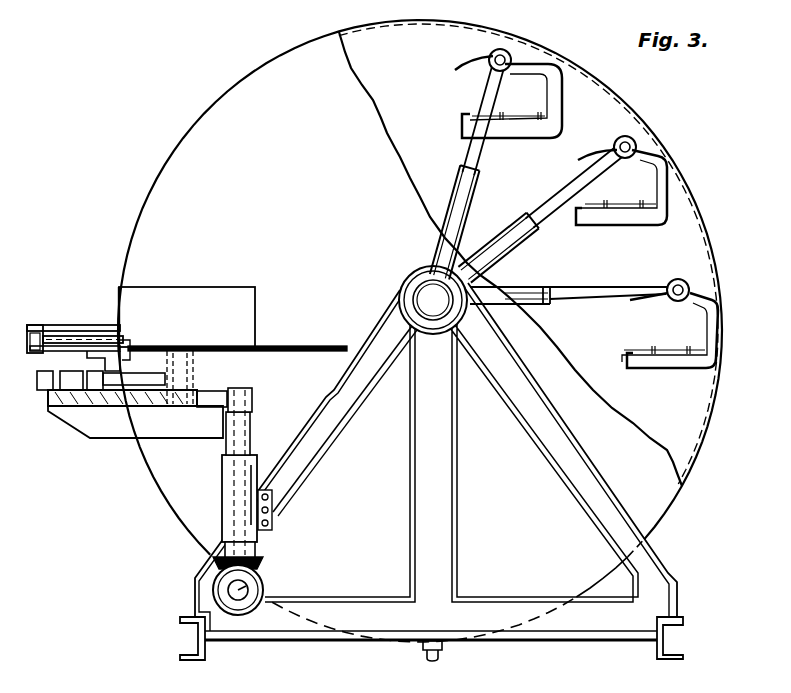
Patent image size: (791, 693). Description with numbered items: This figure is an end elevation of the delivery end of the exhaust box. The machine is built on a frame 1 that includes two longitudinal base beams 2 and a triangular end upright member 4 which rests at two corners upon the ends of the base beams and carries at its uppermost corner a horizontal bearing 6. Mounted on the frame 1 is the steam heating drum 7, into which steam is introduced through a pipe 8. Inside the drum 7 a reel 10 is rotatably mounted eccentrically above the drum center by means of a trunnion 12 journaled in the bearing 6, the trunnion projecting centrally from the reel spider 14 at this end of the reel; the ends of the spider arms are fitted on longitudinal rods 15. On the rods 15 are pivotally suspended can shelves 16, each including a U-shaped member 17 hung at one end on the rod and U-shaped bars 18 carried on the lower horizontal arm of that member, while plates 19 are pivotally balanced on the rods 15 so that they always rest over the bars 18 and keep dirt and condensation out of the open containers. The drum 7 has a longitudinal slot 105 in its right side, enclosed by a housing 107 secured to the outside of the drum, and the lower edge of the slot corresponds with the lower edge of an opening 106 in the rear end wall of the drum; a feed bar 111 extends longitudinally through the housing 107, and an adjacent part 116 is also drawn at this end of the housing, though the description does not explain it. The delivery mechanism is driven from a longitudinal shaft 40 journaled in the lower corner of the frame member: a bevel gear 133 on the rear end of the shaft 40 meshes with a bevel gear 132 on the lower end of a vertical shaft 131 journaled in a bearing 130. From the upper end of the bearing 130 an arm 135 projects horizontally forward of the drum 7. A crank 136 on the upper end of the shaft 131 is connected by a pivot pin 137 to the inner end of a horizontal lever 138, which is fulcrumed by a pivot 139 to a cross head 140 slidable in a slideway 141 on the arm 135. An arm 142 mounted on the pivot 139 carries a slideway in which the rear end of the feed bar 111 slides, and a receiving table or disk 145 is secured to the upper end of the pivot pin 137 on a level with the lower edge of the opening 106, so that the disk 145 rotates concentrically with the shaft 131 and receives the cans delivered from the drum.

The frame 1 is at (325, 634).
The longitudinal base beams 2 is at (203, 632).
The triangular end upright member 4 is at (442, 527).
The horizontal bearing 6 is at (417, 280).
The steam heating drum 7 is at (197, 138).
The pipe 8 is at (442, 652).
The reel 10 is at (467, 172).
The trunnion 12 is at (430, 300).
The reel spider 14 is at (517, 243).
The longitudinal rods 15 is at (506, 52).
The can shelves 16 is at (588, 219).
The U-shaped members 17 is at (555, 120).
The U-shaped bars 18 is at (640, 212).
The plates 19 is at (537, 65).
The shaft 40 is at (248, 590).
The longitudinal slot 105 is at (123, 327).
The opening 106 is at (213, 300).
The housing 107 is at (58, 325).
The feed bar 111 is at (32, 325).
The rod 116 is at (83, 336).
The bearing 130 is at (232, 520).
The vertical shaft 131 is at (233, 490).
The bevel gear 132 is at (259, 568).
The bevel gear 133 is at (213, 590).
The arm 135 is at (195, 422).
The crank 136 is at (212, 396).
The pivot pin 137 is at (190, 388).
The horizontal lever 138 is at (140, 392).
The pivot 139 is at (103, 390).
The cross head 140 is at (140, 350).
The slideway 141 is at (73, 392).
The arm 142 is at (52, 395).
The receiving table or disk 145 is at (293, 345).